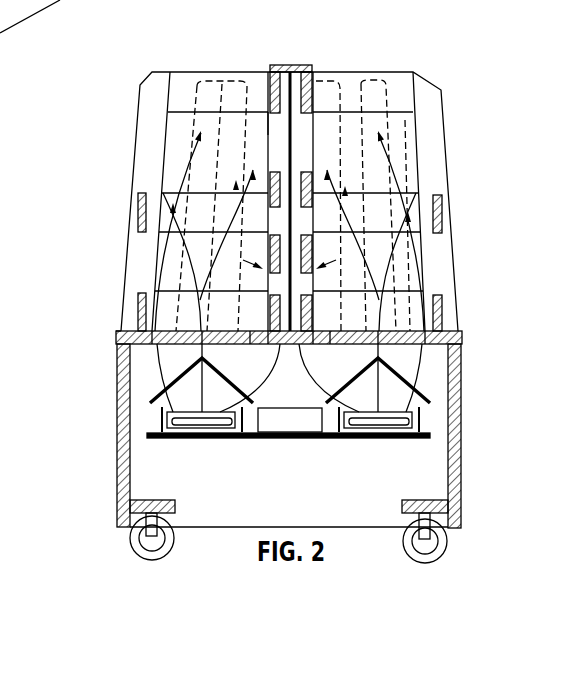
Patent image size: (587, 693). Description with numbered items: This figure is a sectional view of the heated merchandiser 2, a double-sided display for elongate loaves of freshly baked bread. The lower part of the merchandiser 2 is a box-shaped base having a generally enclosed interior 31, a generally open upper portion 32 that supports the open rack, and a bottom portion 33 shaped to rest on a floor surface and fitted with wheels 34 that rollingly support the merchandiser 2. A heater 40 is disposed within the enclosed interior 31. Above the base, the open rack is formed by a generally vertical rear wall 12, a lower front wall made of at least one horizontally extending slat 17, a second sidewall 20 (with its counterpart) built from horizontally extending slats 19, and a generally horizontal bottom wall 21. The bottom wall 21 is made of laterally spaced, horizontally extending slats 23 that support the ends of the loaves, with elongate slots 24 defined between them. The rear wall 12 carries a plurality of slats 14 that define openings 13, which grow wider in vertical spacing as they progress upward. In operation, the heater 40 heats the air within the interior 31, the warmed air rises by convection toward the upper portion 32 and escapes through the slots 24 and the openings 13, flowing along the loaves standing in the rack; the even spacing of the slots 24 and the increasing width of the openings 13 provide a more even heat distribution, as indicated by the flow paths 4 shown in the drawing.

The heated merchandiser 2 is at (398, 45).
The air flow path 4 is at (180, 76).
The rear wall 12 is at (303, 67).
The openings 13 is at (270, 125).
The slats 14 is at (268, 100).
The horizontally extending slat 17 is at (138, 212).
The slats 19 is at (163, 193).
The second sidewall 20 is at (440, 81).
The bottom wall 21 is at (104, 344).
The slats 23 is at (455, 333).
The elongate slots 24 is at (383, 335).
The enclosed interior 31 is at (148, 463).
The upper portion 32 is at (118, 320).
The bottom portion 33 is at (427, 507).
The wheels 34 is at (127, 538).
The heater 40 is at (422, 396).